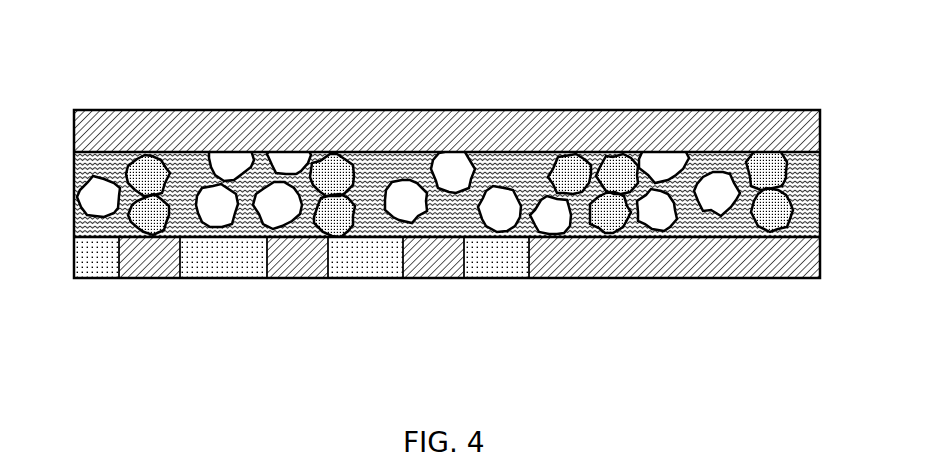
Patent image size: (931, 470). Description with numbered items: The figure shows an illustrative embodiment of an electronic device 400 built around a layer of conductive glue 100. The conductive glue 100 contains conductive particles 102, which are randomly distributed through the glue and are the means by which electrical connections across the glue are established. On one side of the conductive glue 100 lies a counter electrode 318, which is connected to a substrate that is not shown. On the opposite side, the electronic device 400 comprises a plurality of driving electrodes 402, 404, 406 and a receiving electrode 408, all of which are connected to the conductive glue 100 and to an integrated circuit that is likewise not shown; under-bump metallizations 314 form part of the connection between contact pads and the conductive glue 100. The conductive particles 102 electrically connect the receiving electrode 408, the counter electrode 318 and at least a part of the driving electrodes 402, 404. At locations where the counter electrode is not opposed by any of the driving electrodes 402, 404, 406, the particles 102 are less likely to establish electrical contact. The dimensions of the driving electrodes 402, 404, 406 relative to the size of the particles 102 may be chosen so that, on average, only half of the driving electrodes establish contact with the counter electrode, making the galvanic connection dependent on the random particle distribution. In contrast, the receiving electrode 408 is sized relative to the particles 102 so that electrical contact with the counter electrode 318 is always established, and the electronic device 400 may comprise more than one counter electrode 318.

The electronic device 400 is at (261, 82).
The counter electrode 318 is at (578, 140).
The conductive glue 100 is at (195, 173).
The conductive particles 102 is at (765, 158).
The under-bump metallization 314 is at (95, 270).
The driving electrode 402 is at (160, 270).
The driving electrode 404 is at (310, 272).
The driving electrode 406 is at (443, 272).
The receiving electrode 408 is at (678, 274).